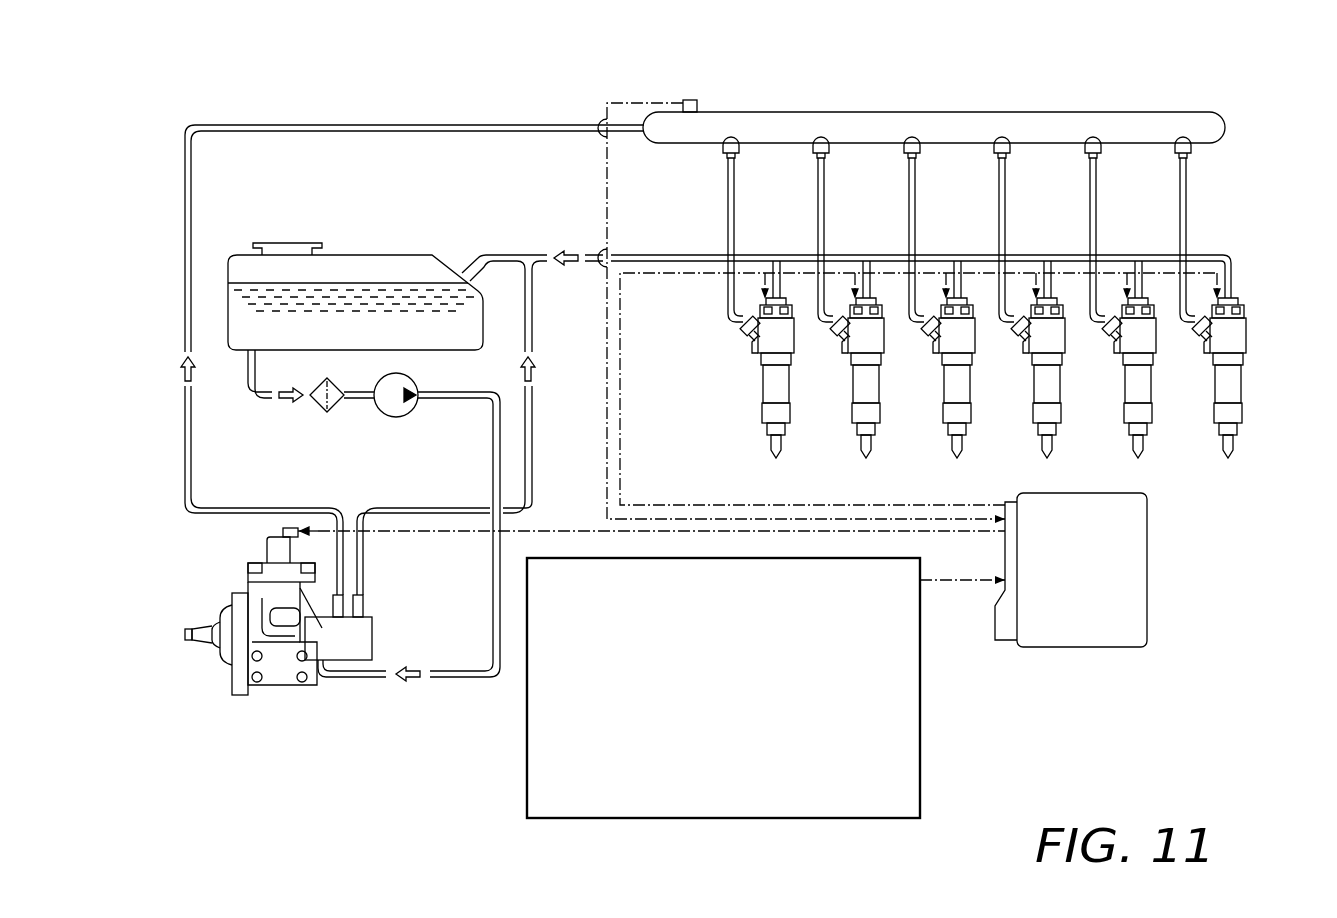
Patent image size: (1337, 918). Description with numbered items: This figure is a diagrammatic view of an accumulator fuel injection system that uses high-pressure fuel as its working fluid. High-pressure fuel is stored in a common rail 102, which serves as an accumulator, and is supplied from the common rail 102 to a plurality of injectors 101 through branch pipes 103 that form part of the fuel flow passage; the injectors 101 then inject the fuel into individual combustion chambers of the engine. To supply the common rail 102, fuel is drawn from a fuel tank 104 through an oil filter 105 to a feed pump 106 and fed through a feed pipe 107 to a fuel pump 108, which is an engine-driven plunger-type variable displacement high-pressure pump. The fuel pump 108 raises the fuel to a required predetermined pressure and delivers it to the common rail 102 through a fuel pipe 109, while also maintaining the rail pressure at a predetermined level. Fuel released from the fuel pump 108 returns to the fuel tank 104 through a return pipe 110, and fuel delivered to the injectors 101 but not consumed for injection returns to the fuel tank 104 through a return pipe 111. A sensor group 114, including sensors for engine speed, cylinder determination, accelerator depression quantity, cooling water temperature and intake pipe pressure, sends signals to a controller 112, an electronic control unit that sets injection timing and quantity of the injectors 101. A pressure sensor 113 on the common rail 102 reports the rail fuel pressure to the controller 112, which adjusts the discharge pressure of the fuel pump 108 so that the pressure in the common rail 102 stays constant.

The injectors 101 is at (792, 389).
The common rail 102 is at (956, 128).
The branch pipes 103 is at (736, 213).
The fuel tank 104 is at (400, 262).
The oil filter 105 is at (322, 405).
The feed pump 106 is at (387, 418).
The feed pipe 107 is at (493, 607).
The fuel pump 108 is at (279, 680).
The fuel pipe 109 is at (191, 428).
The return pipe 110 is at (532, 430).
The return pipe 111 is at (650, 257).
The controller 112 is at (1130, 577).
The pressure sensor 113 is at (690, 100).
The sensor group 114 is at (920, 697).